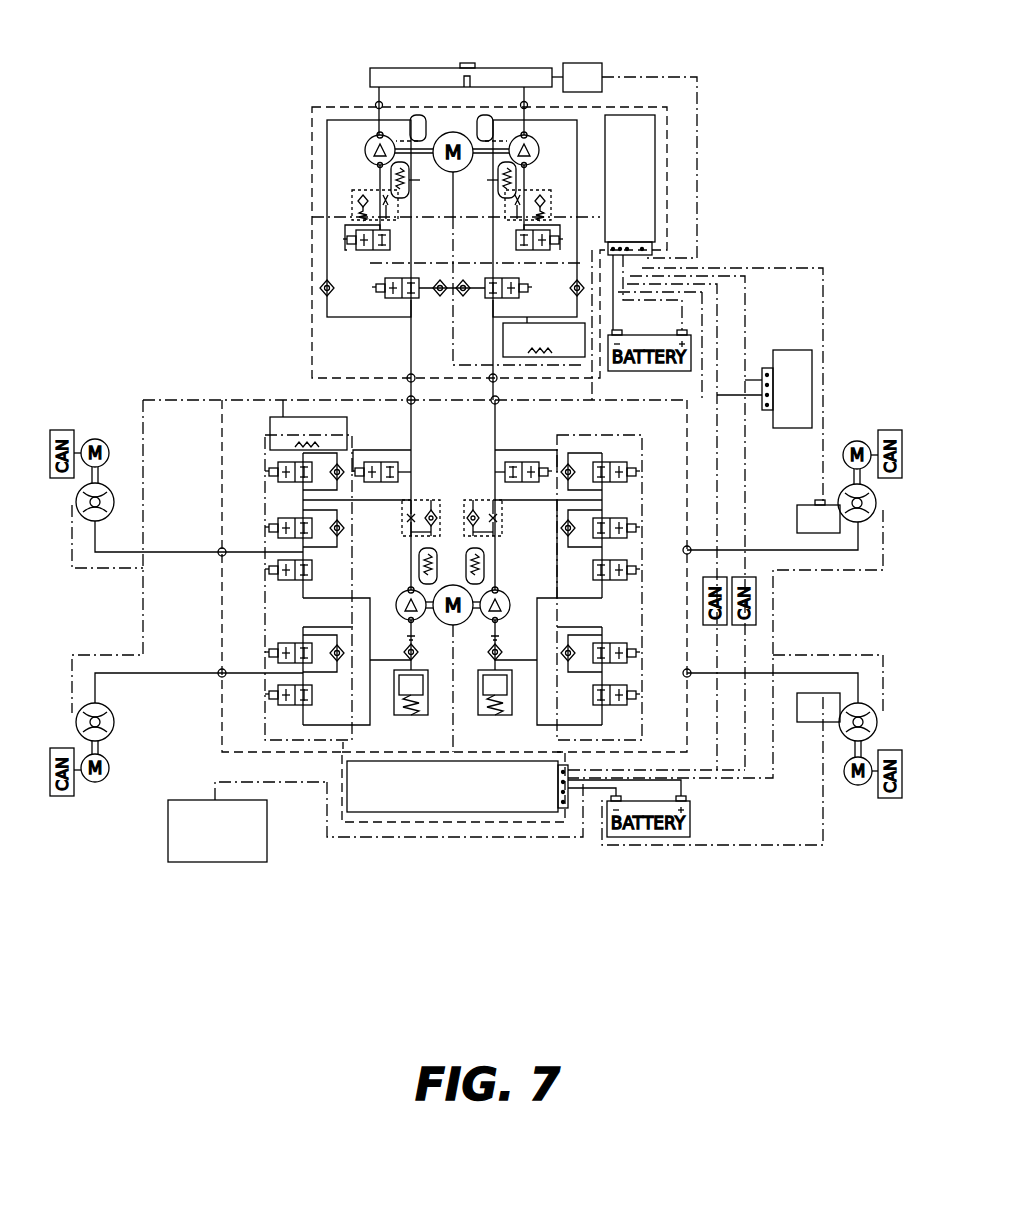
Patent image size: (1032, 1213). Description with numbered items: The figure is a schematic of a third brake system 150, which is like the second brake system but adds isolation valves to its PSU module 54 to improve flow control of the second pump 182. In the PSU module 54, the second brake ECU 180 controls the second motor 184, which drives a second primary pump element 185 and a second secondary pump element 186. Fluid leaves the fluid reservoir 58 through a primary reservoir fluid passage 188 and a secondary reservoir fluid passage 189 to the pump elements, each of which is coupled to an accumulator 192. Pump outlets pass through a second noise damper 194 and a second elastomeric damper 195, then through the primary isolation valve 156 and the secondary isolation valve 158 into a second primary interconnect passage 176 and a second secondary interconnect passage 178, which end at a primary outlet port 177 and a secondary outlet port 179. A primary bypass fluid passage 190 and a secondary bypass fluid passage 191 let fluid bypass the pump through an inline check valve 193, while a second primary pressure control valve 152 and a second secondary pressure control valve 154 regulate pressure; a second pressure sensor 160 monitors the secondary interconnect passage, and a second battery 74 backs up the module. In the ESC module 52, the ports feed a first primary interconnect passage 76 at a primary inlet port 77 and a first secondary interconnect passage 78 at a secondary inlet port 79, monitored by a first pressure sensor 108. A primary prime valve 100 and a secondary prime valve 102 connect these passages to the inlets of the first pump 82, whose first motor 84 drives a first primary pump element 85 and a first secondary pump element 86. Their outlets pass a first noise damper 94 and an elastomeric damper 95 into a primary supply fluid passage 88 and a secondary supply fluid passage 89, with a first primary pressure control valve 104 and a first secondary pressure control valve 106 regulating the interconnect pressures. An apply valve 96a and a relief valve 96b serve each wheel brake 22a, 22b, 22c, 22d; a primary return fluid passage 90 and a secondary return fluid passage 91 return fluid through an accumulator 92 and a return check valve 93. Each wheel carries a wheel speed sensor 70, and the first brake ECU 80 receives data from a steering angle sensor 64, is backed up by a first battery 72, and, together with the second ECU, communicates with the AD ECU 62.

The third brake system 150 is at (237, 170).
The PSU module 54 is at (312, 155).
The ESC module 52 is at (220, 448).
The fluid reservoir 58 is at (444, 68).
The second brake ECU 180 is at (631, 120).
The second pump 182 is at (377, 132).
The second motor 184 is at (440, 140).
The second primary pump element 185 is at (370, 150).
The second secondary pump element 186 is at (533, 150).
The primary reservoir fluid passage 188 is at (377, 114).
The secondary reservoir fluid passage 189 is at (528, 118).
The primary bypass fluid passage 190 is at (326, 207).
The secondary bypass fluid passage 191 is at (578, 150).
The accumulator 192 is at (415, 114).
The inline check valve 193 is at (320, 287).
The second noise damper 194 is at (368, 194).
The second elastomeric damper 195 is at (453, 182).
The second primary pressure control valve 152 is at (346, 238).
The second secondary pressure control valve 154 is at (510, 236).
The primary isolation valve 156 is at (384, 300).
The secondary isolation valve 158 is at (506, 302).
The second pressure sensor 160 is at (645, 326).
The second primary interconnect passage 176 is at (410, 352).
The primary outlet port 177 is at (420, 350).
The second secondary interconnect passage 178 is at (492, 350).
The secondary outlet port 179 is at (500, 378).
The second battery 74 is at (620, 373).
The AD ECU 62 is at (794, 350).
The first pressure sensor 108 is at (272, 417).
The first primary pressure control valve 104 is at (280, 466).
The first secondary pressure control valve 106 is at (620, 466).
The first primary interconnect passage 76 is at (408, 432).
The primary inlet port 77 is at (415, 407).
The first secondary interconnect passage 78 is at (492, 411).
The secondary inlet port 79 is at (498, 407).
The primary prime valve 100 is at (400, 466).
The secondary prime valve 102 is at (506, 462).
The apply valve 96a is at (294, 518).
The relief valve 96b is at (288, 585).
The primary supply fluid passage 88 is at (370, 502).
The secondary supply fluid passage 89 is at (546, 500).
The first noise damper 94 is at (412, 505).
The elastomeric damper 95 is at (433, 554).
The first pump 82 is at (396, 600).
The first motor 84 is at (447, 580).
The first primary pump element 85 is at (402, 595).
The first secondary pump element 86 is at (511, 592).
The return check valve 93 is at (416, 650).
The accumulator 92 is at (411, 715).
The primary return fluid passage 90 is at (370, 658).
The secondary return fluid passage 91 is at (540, 672).
The wheel brake 22a is at (72, 504).
The wheel brake 22b is at (72, 722).
The right-rear wheel brake 22c is at (880, 500).
The left-rear wheel brake 22d is at (880, 736).
The wheel speed sensor 70 is at (98, 440).
The first brake ECU 80 is at (536, 794).
The steering angle sensor 64 is at (267, 848).
The first battery 72 is at (690, 823).